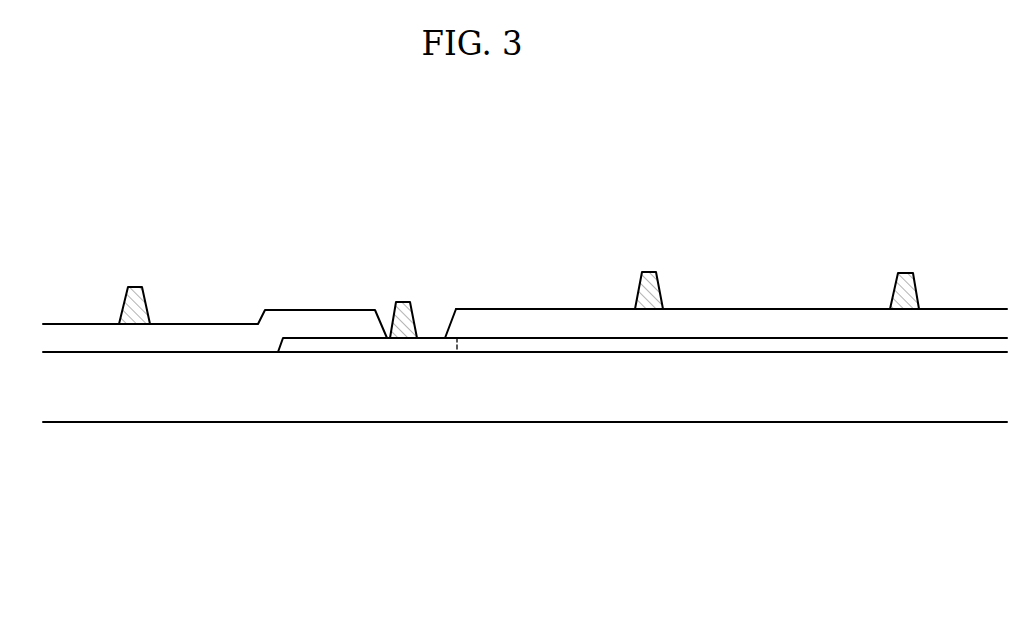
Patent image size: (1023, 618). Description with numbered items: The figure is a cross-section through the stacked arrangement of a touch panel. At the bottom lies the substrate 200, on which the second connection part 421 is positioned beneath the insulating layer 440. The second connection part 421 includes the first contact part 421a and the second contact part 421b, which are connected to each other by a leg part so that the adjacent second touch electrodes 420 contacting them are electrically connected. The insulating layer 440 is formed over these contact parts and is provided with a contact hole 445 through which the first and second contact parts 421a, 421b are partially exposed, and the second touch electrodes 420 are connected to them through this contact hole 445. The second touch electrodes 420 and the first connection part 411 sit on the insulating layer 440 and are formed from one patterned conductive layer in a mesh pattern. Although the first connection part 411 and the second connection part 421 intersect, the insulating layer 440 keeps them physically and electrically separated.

The substrate 200 is at (693, 395).
The first connection part 411 is at (645, 276).
The second touch electrode 420 is at (131, 286).
The second connection part 421 is at (525, 430).
The first contact part 421a is at (415, 342).
The second contact part 421b is at (494, 342).
The insulating layer 440 is at (772, 323).
The contact hole 445 is at (446, 330).